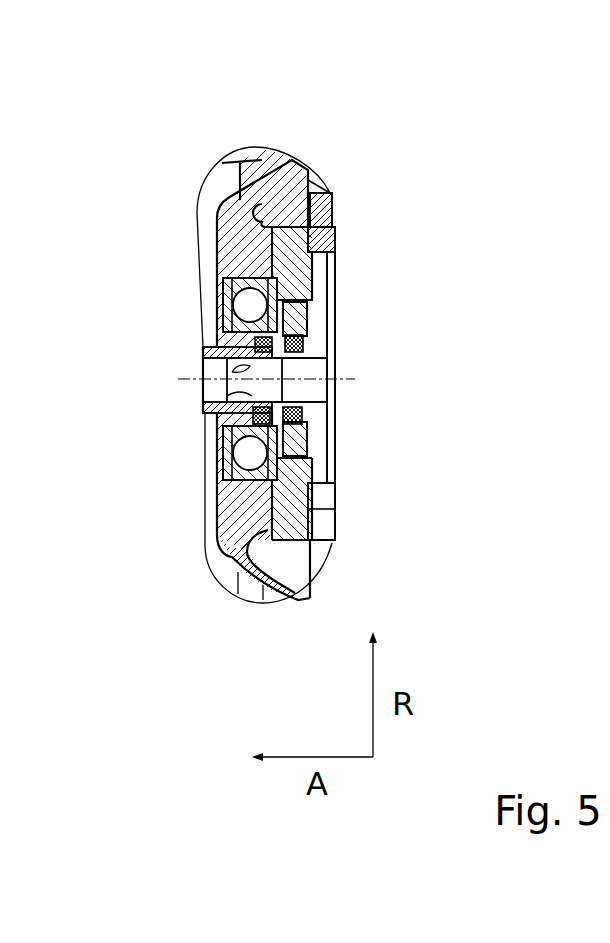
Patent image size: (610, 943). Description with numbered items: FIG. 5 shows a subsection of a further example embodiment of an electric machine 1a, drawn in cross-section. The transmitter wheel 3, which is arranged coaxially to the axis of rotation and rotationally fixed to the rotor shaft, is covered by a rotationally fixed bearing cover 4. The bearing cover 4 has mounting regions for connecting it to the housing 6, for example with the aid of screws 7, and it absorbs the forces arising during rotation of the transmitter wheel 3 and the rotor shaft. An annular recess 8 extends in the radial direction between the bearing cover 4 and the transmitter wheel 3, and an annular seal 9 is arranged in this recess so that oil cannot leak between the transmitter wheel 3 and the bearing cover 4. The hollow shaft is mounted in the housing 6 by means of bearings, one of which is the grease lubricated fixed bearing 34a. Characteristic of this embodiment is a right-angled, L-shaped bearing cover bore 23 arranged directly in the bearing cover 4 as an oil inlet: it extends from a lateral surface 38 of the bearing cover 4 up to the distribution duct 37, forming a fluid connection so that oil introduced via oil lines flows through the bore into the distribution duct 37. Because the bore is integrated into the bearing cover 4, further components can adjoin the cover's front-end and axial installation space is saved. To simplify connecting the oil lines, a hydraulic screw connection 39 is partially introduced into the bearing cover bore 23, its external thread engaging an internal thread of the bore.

The electric machine 1a is at (150, 178).
The housing 6 is at (232, 218).
The fixed bearing 34a is at (250, 305).
The hydraulic screw connection 39 is at (318, 190).
The lateral surface 38 is at (333, 223).
The transmitter wheel 3 is at (312, 310).
The seal 9 is at (303, 342).
The distribution duct 37 is at (262, 368).
The bearing cover bore 23 is at (290, 389).
The annular recess 8 is at (318, 428).
The bearing cover 4 is at (290, 497).
The screws 7 is at (323, 523).